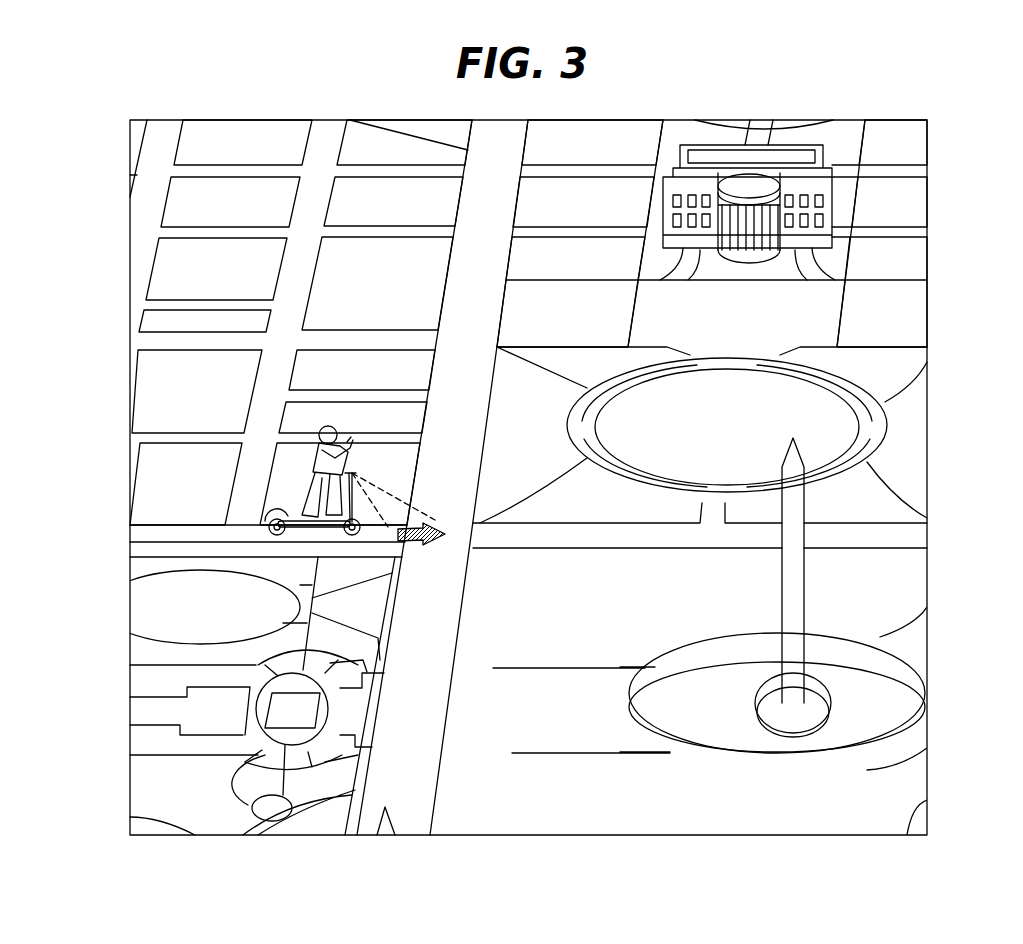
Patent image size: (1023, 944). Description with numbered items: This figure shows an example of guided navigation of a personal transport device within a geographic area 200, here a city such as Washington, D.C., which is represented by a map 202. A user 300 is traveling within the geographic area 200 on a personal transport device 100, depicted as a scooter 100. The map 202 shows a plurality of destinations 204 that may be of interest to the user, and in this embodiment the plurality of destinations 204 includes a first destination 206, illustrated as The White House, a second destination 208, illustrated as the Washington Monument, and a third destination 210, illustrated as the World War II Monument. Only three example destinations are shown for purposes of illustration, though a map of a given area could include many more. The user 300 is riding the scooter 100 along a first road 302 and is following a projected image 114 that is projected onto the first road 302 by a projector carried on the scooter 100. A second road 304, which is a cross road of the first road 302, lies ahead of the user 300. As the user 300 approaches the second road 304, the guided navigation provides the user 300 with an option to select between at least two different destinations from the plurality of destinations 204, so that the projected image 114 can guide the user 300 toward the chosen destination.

The personal transport device 100 is at (356, 492).
The projected image 114 is at (433, 546).
The geographic area 200 is at (253, 92).
The map 202 is at (893, 133).
The plurality of destinations 204 is at (655, 778).
The first destination 206 is at (847, 310).
The second destination 208 is at (862, 807).
The third destination 210 is at (457, 765).
The user 300 is at (316, 472).
The first road 302 is at (157, 533).
The second road 304 is at (477, 397).